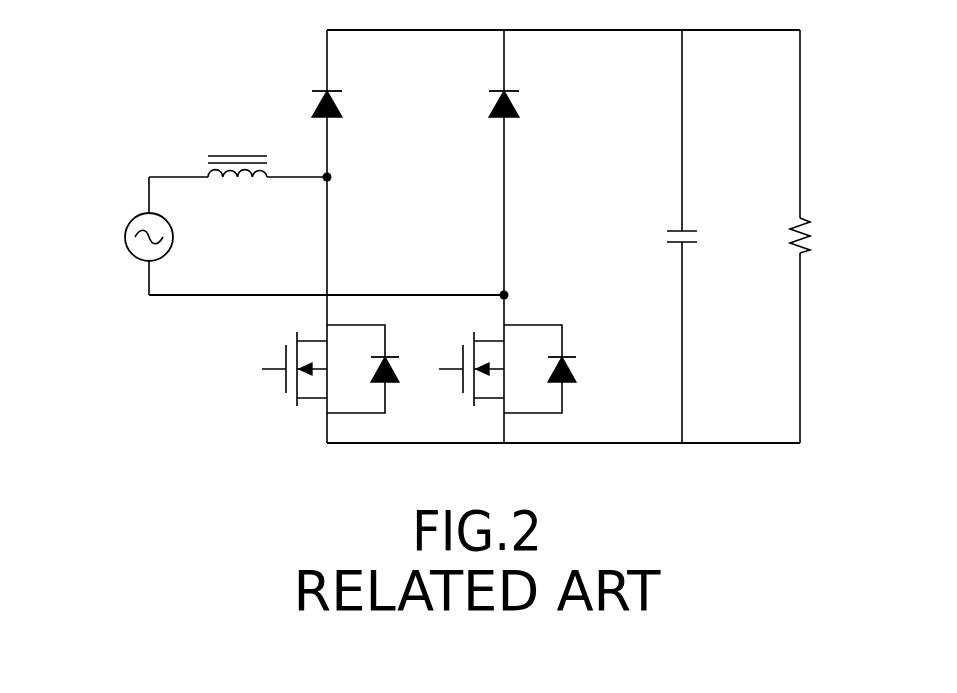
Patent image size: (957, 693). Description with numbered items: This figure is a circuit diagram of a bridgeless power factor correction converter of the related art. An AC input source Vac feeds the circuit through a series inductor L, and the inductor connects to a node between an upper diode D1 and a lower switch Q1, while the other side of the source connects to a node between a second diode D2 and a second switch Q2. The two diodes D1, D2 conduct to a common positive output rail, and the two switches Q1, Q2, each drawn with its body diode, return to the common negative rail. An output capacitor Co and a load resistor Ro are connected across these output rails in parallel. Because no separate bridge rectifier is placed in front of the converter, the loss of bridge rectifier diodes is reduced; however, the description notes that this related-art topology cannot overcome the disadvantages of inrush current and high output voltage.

The diode D1 is at (345, 162).
The diode D2 is at (522, 236).
The AC voltage source Vac is at (141, 236).
The inductor L is at (267, 187).
The switching transistor Q1 is at (326, 369).
The switching transistor Q2 is at (503, 356).
The output capacitor Co is at (702, 236).
The output load resistor Ro is at (820, 236).